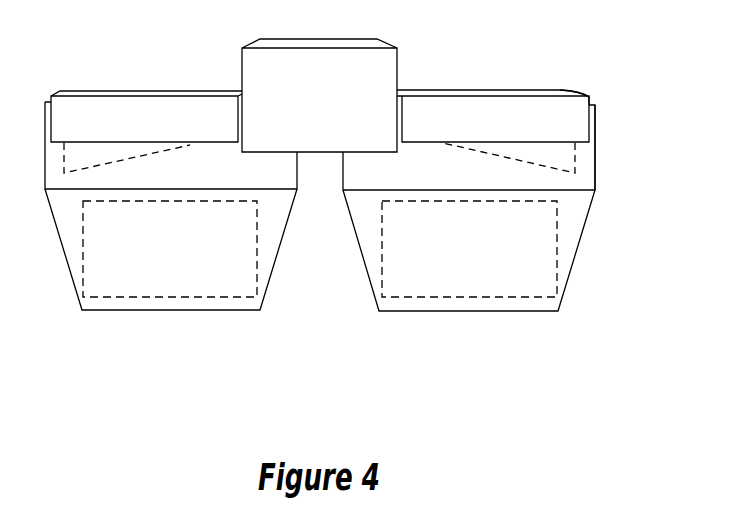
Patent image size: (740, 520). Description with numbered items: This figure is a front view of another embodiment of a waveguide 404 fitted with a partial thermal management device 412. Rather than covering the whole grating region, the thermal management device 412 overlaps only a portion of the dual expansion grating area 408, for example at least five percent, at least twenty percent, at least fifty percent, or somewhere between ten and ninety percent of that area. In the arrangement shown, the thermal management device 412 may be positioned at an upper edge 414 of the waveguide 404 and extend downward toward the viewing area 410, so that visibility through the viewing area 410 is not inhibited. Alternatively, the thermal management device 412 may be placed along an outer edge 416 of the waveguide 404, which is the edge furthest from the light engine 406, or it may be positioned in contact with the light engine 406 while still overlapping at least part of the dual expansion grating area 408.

The waveguide 404 is at (588, 217).
The light engine 406 is at (387, 70).
The dual expansion grating area 408 is at (570, 153).
The viewing area 410 is at (550, 286).
The thermal management device 412 is at (492, 102).
The upper edge 414 is at (592, 98).
The outer edge 416 is at (597, 114).